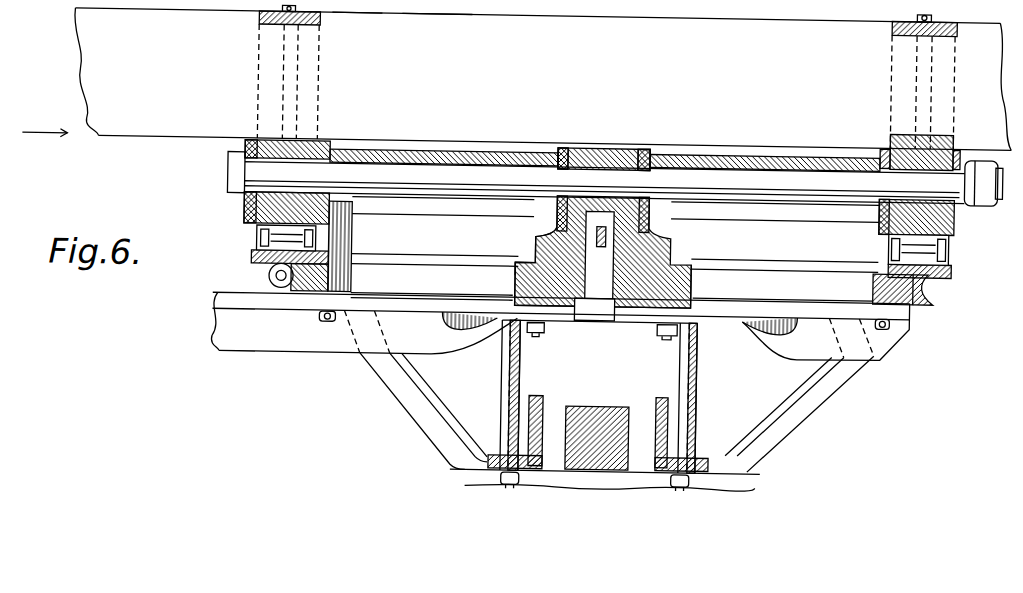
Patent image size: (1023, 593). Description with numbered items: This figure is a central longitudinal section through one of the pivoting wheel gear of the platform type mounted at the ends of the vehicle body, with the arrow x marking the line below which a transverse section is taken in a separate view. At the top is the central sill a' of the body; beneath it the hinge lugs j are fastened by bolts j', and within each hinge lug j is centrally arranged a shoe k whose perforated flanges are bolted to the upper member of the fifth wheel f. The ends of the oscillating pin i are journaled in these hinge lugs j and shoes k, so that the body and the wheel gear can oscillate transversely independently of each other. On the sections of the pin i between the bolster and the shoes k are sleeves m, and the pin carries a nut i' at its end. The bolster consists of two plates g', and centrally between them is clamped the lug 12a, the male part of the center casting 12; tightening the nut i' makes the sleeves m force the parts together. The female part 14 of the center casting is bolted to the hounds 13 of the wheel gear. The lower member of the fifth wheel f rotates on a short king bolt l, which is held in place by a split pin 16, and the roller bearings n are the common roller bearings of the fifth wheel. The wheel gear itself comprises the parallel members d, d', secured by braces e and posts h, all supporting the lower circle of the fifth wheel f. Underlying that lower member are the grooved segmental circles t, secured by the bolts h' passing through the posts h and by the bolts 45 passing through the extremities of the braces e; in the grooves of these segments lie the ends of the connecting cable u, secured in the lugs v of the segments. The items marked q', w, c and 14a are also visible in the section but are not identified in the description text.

The central sill a' is at (543, 78).
The frame member q' is at (357, 23).
The frame top member w is at (420, 4).
The arrow x is at (44, 123).
The bolts j' is at (272, 71).
The frame side c is at (911, 81).
The sleeves m is at (412, 154).
The oscillating pin i is at (608, 198).
The nut i' is at (983, 164).
The hinge lugs j is at (582, 185).
The shoes k is at (245, 226).
The roller bearings n is at (260, 255).
The fifth wheel f is at (585, 251).
The lugs v is at (268, 278).
The lug 12a is at (602, 152).
The bolster plates g' is at (613, 285).
The center casting 12 is at (610, 258).
The king bolt l is at (653, 240).
The split pin 16 is at (560, 232).
The female part of center casting 14 is at (697, 286).
The clips 14a is at (540, 334).
The connecting cable u is at (263, 292).
The grooved segmental circles t is at (907, 303).
The hounds 13 is at (619, 348).
The bolts 45 is at (328, 326).
The braces e is at (408, 399).
The posts h is at (601, 397).
The bolts h' is at (591, 479).
The parallel member d is at (517, 421).
The parallel member d' is at (670, 423).